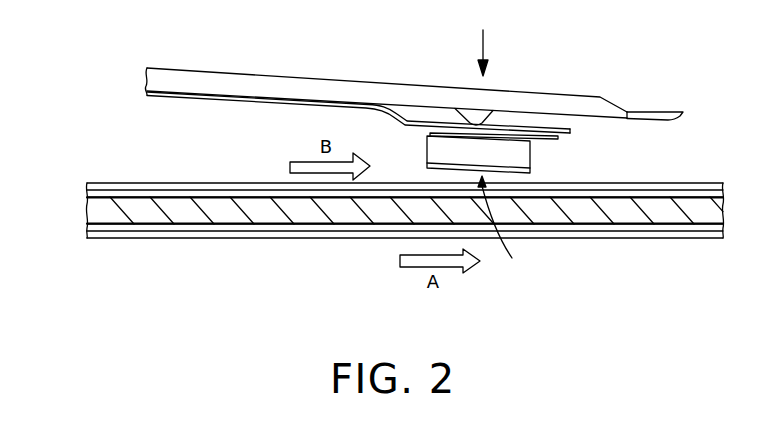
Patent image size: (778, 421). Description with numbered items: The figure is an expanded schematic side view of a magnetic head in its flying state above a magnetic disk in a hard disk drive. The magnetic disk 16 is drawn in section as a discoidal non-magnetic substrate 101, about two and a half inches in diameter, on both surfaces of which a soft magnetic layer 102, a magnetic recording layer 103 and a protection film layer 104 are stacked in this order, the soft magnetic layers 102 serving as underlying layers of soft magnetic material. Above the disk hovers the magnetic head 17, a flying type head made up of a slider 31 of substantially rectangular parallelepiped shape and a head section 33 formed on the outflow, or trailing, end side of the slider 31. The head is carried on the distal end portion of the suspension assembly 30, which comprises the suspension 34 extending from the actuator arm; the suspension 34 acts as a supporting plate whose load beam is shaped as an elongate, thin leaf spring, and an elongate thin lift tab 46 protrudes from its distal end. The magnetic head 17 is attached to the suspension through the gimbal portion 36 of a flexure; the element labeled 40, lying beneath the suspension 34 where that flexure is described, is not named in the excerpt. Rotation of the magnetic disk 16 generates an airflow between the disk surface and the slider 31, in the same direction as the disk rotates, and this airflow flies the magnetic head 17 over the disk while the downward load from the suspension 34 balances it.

The magnetic disk 16 is at (128, 150).
The magnetic head 17 is at (499, 232).
The suspension assembly 30 is at (334, 63).
The slider 31 is at (494, 152).
The head section 33 is at (521, 155).
The suspension 34 is at (234, 83).
The gimbal portion 36 is at (423, 108).
The leaf spring plate 40 is at (217, 100).
The lift tab 46 is at (660, 111).
The non-magnetic substrate 101 is at (197, 218).
The soft magnetic layer 102 is at (90, 199).
The magnetic recording layer 103 is at (152, 186).
The protection film layer 104 is at (102, 185).